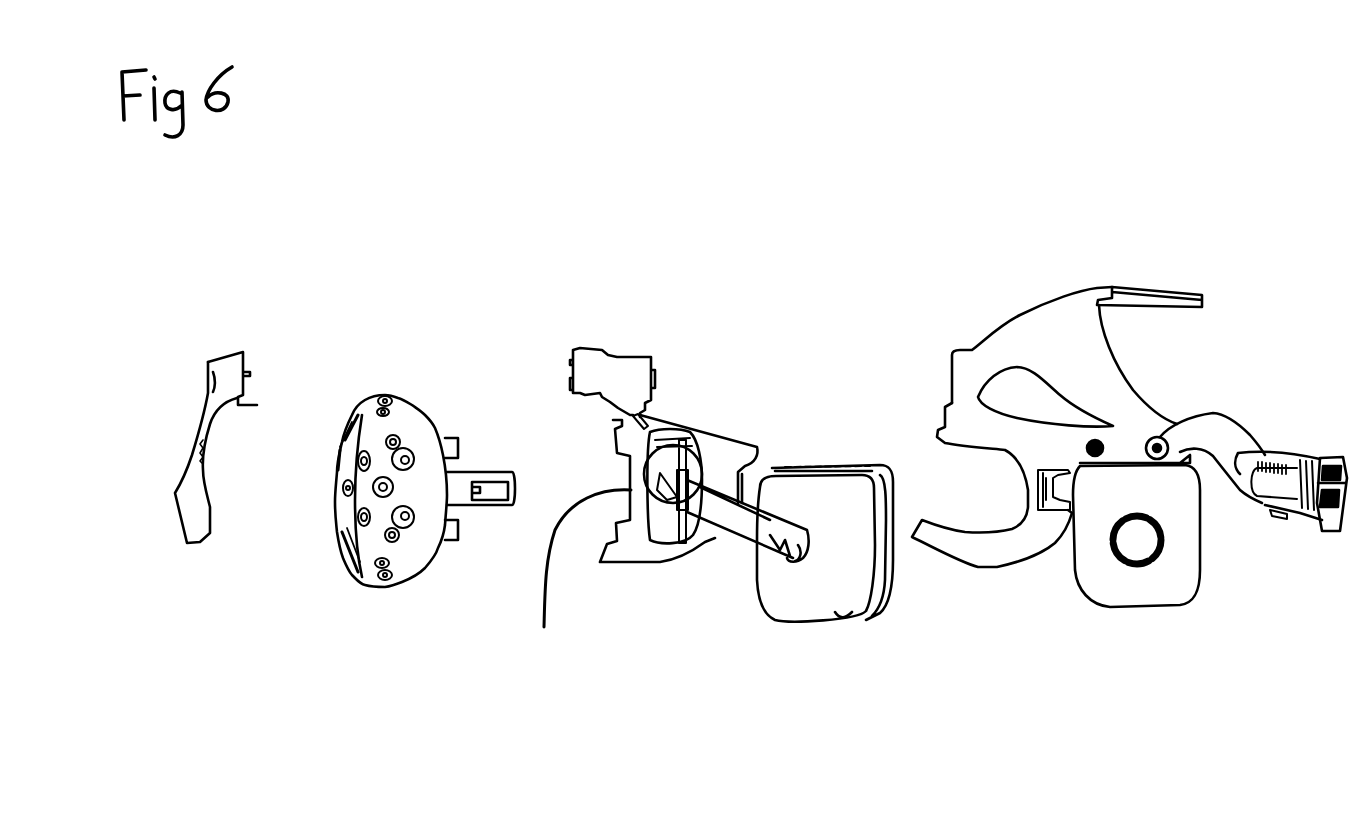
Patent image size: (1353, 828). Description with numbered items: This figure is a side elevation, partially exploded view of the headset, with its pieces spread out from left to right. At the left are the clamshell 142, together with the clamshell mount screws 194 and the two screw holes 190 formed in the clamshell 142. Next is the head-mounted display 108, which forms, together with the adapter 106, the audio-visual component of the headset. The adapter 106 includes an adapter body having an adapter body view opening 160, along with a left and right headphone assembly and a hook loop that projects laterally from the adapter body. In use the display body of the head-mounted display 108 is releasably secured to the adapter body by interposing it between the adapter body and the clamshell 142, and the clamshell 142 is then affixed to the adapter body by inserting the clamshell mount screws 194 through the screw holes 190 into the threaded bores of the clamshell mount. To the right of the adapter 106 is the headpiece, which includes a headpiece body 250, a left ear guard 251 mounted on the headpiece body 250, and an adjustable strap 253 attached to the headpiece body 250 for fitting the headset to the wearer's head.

The adapter 106 is at (713, 428).
The head-mounted display 108 is at (395, 373).
The clamshell 142 is at (240, 342).
The adapter body view opening 160 is at (579, 582).
The screw holes 190 is at (210, 390).
The clamshell mount screws 194 is at (68, 370).
The headpiece body 250 is at (1056, 277).
The left ear guard 251 is at (1200, 647).
The adjustable strap 253 is at (1265, 420).